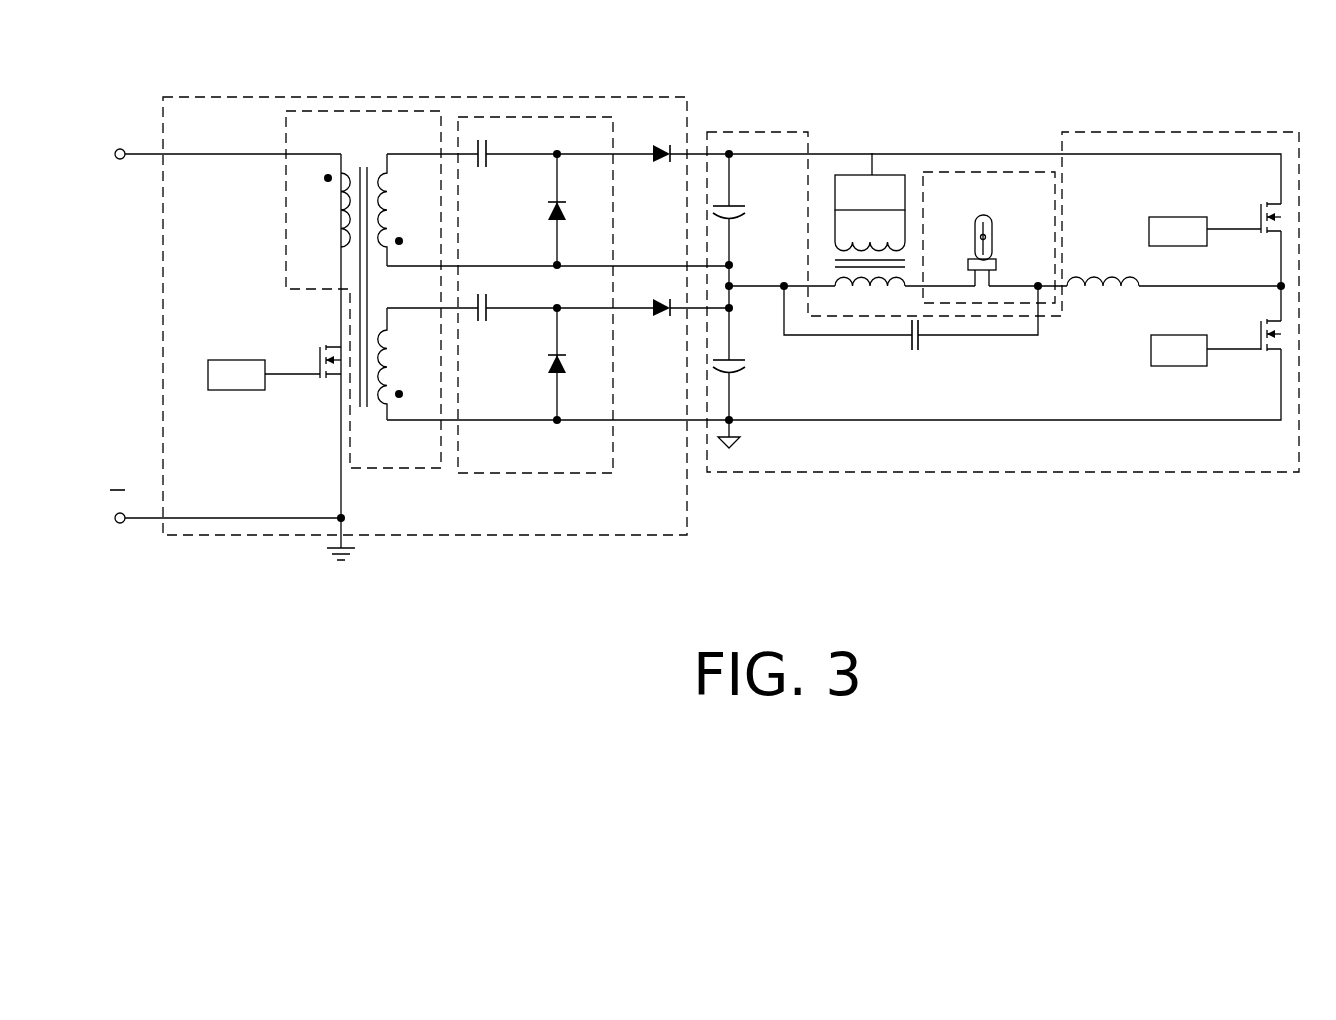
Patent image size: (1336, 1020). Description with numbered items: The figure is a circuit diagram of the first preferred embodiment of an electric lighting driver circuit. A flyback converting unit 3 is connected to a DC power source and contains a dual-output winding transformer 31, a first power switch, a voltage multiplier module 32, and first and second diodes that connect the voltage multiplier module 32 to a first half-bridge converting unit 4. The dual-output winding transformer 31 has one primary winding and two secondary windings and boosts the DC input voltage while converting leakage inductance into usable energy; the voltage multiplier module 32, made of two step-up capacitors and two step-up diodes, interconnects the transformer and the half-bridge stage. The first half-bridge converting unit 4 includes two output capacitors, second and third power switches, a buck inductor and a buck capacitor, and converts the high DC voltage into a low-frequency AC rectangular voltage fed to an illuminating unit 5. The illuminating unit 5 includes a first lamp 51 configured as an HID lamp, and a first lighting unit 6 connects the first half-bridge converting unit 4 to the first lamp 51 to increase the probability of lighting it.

The flyback converting unit 3 is at (160, 110).
The dual-output winding transformer 31 is at (395, 111).
The voltage multiplier module 32 is at (556, 117).
The first half-bridge converting unit 4 is at (1183, 130).
The illuminating unit 5 is at (992, 172).
The first lighting unit 6 is at (872, 153).
The first lamp 51 is at (988, 240).